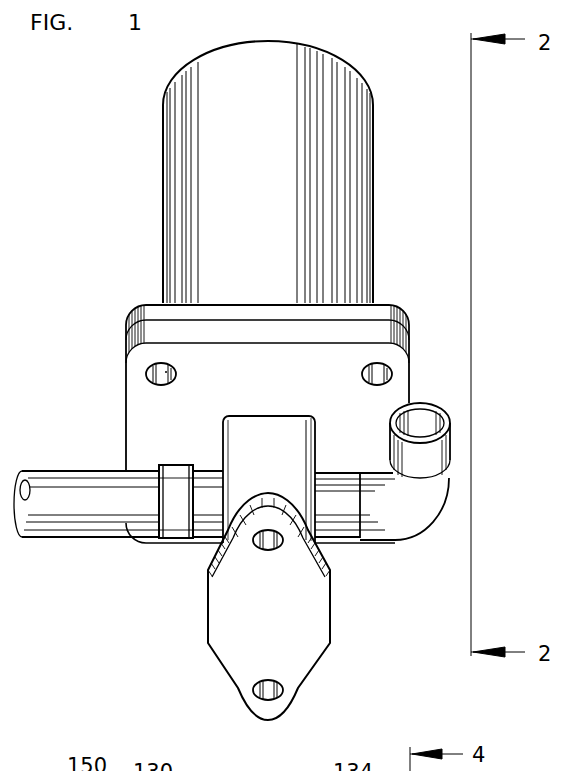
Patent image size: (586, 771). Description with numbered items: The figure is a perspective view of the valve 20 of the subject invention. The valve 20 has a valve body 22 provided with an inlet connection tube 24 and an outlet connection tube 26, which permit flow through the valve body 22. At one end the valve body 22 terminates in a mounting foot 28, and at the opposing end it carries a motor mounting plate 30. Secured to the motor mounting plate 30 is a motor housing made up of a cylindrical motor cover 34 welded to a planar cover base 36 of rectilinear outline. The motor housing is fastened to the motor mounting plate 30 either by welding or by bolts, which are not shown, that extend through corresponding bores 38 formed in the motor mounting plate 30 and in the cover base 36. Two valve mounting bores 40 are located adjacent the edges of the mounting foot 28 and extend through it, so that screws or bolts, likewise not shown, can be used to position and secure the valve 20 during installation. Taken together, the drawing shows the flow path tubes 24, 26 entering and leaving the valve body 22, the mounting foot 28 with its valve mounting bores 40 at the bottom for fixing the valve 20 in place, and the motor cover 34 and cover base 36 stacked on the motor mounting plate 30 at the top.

The valve 20 is at (112, 365).
The valve body 22 is at (280, 475).
The inlet connection tube 24 is at (410, 505).
The outlet connection tube 26 is at (58, 515).
The mounting foot 28 is at (212, 607).
The motor mounting plate 30 is at (393, 334).
The cylindrical motor cover 34 is at (163, 213).
The planar cover base 36 is at (145, 315).
The bores 38 is at (154, 384).
The valve mounting bores 40 is at (273, 694).